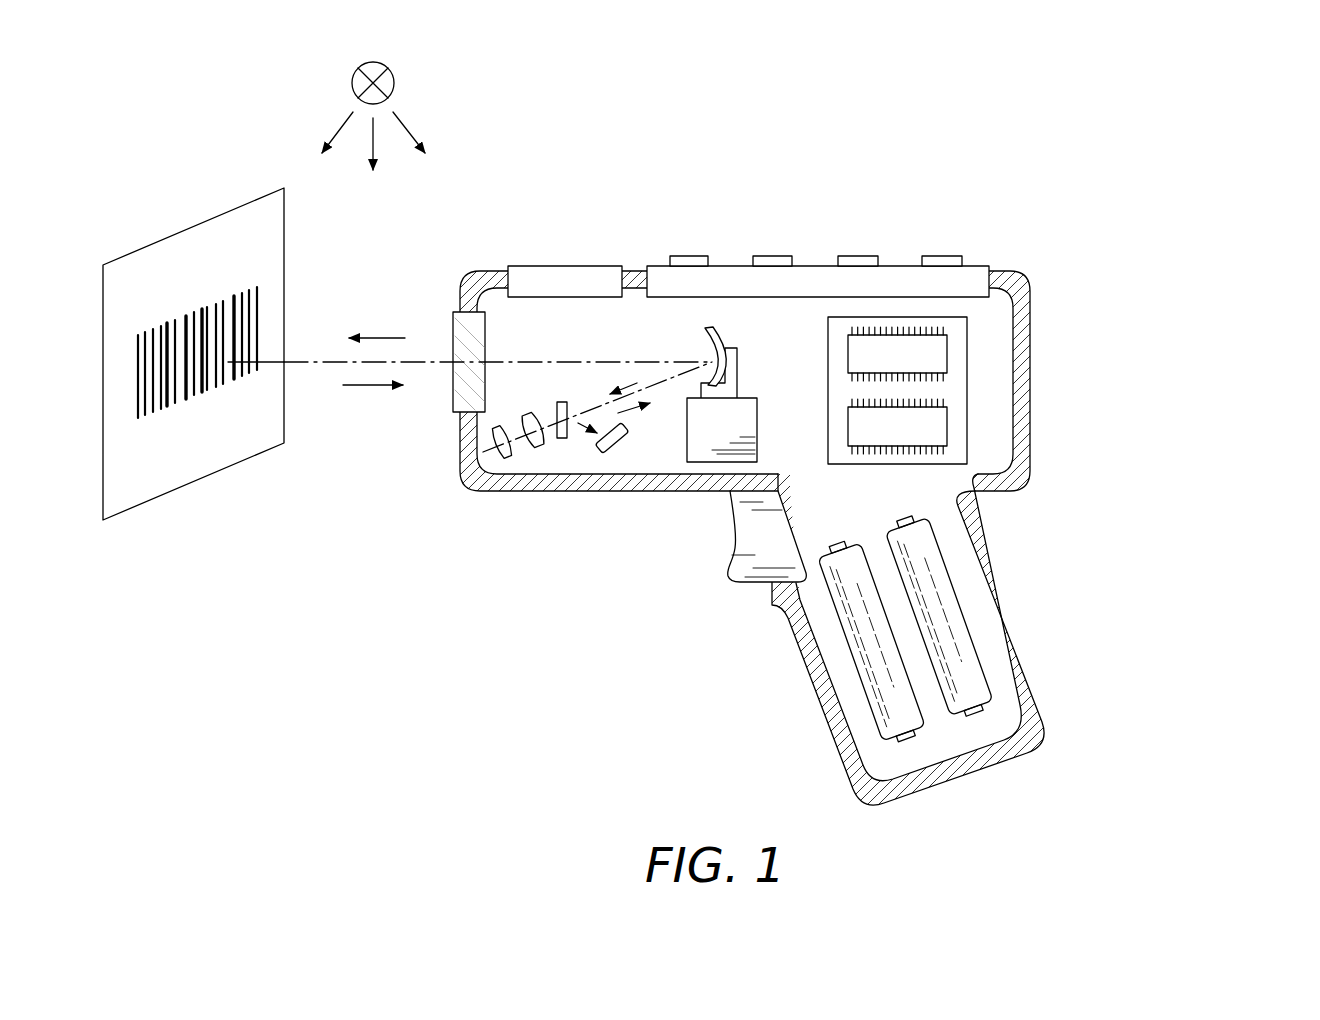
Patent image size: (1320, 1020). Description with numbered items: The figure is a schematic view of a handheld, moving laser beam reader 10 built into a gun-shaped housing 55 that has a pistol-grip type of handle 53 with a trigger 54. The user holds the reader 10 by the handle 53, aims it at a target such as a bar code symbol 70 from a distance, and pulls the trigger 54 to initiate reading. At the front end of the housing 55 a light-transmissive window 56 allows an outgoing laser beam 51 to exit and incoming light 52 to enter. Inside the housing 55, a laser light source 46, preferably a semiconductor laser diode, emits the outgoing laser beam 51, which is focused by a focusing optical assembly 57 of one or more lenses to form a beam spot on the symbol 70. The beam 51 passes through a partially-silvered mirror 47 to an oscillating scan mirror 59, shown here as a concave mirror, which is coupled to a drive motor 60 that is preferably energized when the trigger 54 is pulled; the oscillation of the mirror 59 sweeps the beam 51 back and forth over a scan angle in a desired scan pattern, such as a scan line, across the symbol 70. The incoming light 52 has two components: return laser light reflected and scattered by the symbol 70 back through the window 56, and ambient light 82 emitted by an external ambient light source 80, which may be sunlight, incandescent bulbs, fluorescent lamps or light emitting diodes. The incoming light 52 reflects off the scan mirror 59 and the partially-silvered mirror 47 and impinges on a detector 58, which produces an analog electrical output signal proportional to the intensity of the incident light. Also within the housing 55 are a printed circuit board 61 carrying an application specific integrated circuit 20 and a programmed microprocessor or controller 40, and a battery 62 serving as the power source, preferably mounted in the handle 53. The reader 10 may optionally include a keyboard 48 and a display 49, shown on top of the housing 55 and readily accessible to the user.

The reader 10 is at (540, 624).
The application specific integrated circuit (ASIC) 20 is at (937, 423).
The microprocessor 40 is at (937, 353).
The laser light source 46 is at (500, 456).
The partially-silvered mirror 47 is at (565, 440).
The keyboard 48 is at (906, 275).
The display 49 is at (540, 273).
The outgoing laser beam 51 is at (385, 336).
The incoming light 52 is at (363, 387).
The handle 53 is at (813, 688).
The trigger 54 is at (742, 585).
The housing 55 is at (1035, 468).
The light-transmissive window 56 is at (458, 320).
The focusing optical assembly 57 is at (537, 452).
The detector 58 is at (615, 447).
The oscillating scan mirror 59 is at (706, 336).
The drive motor 60 is at (698, 450).
The printed circuit board 61 is at (968, 390).
The battery 62 is at (975, 716).
The bar code symbol 70 is at (240, 292).
The external ambient light source 80 is at (390, 82).
The ambient light 82 is at (378, 143).